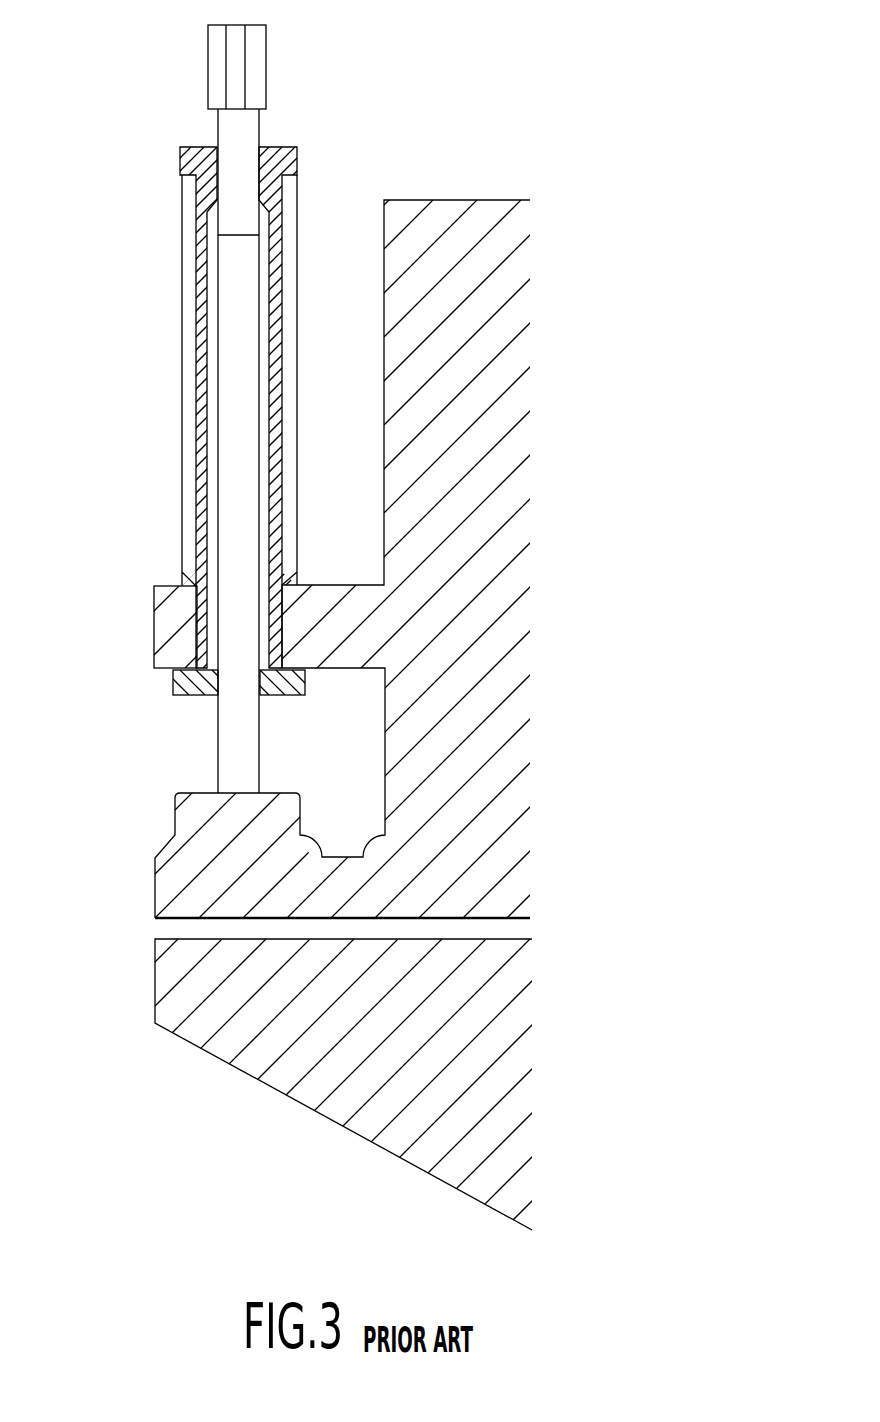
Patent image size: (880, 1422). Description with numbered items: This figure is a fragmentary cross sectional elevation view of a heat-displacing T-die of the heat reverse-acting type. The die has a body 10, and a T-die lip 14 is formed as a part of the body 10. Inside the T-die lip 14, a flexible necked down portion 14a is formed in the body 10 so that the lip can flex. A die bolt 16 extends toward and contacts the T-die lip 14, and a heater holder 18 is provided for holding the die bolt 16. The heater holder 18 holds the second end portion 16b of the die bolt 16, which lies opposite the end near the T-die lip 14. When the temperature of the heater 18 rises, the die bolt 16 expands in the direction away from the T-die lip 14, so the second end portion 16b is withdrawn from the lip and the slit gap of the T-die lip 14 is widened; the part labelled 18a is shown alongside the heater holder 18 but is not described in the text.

The body 10 is at (468, 223).
The T-die lip 14 is at (155, 880).
The flexible necked down portion 14a is at (363, 855).
The die bolt 16 is at (267, 62).
The second end portion 16b is at (200, 200).
The heater holder 18 is at (182, 350).
The clamp ring 18a is at (182, 576).